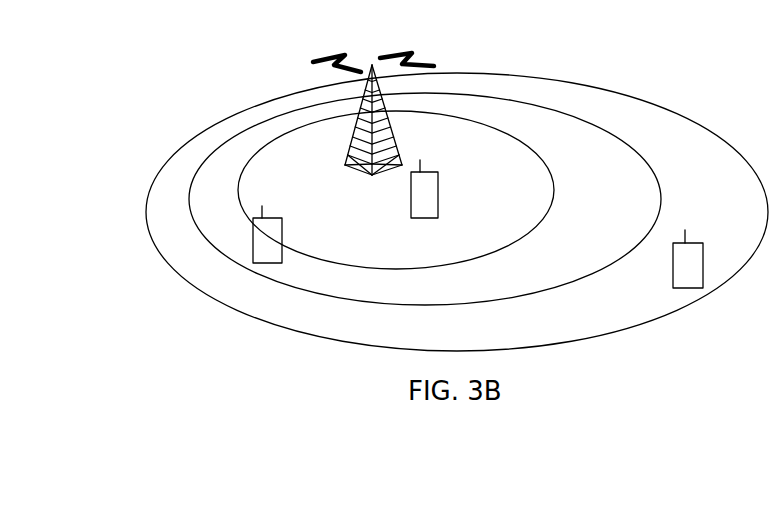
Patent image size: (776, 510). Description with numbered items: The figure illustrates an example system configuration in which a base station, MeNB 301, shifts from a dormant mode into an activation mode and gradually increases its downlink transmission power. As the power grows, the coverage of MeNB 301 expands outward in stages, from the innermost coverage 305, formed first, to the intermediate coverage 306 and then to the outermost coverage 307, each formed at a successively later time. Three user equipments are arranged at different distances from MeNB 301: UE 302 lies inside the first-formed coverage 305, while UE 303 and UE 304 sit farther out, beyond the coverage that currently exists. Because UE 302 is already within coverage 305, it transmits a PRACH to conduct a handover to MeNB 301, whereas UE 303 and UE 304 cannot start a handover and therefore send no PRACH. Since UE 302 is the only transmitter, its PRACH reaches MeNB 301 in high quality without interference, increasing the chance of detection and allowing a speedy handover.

The MeNB 301 is at (373, 64).
The UE 302 is at (428, 172).
The UE 303 is at (272, 218).
The UE 304 is at (692, 243).
The coverage 305 is at (603, 177).
The coverage 306 is at (708, 159).
The coverage 307 is at (699, 81).